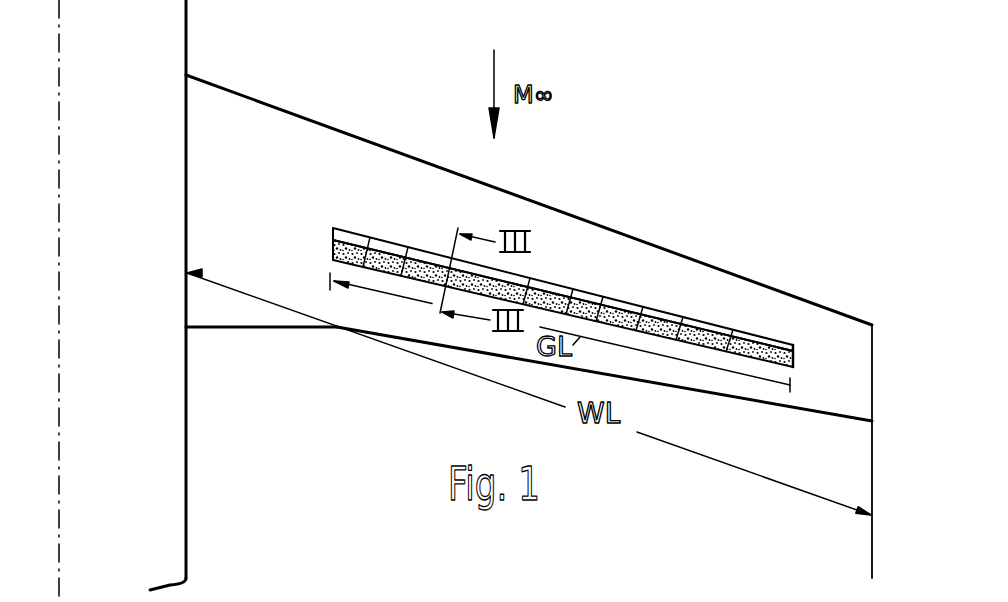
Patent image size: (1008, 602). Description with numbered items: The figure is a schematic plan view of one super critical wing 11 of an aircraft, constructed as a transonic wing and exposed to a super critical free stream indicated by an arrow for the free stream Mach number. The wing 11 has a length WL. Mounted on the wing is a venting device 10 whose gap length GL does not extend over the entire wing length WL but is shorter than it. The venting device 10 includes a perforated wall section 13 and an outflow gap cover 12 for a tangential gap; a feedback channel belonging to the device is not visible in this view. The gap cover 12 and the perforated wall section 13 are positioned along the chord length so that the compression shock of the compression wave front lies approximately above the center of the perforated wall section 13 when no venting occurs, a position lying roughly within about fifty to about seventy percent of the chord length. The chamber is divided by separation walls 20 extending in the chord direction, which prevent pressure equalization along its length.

The venting device 10 is at (582, 290).
The super critical wing 11 is at (657, 260).
The outflow gap cover 12 is at (733, 342).
The perforated wall section 13 is at (793, 364).
The separation walls 20 is at (582, 283).